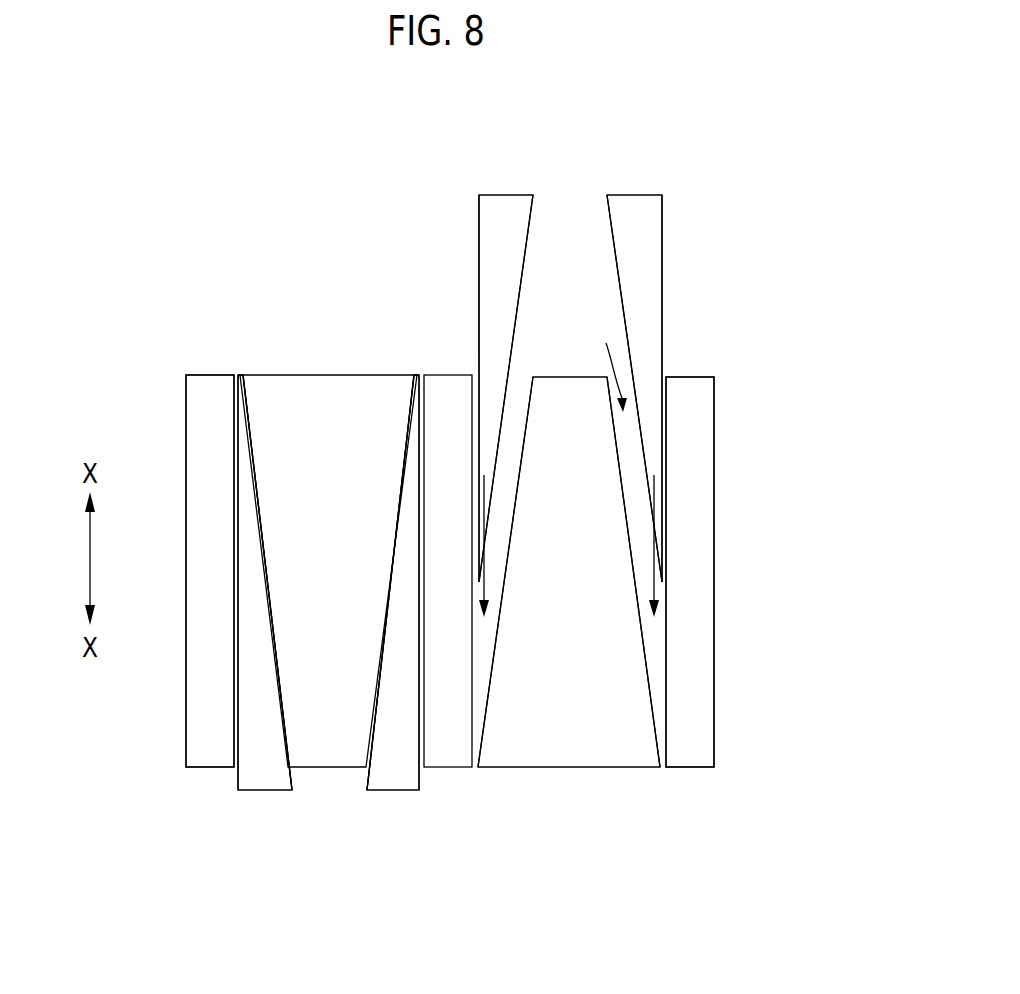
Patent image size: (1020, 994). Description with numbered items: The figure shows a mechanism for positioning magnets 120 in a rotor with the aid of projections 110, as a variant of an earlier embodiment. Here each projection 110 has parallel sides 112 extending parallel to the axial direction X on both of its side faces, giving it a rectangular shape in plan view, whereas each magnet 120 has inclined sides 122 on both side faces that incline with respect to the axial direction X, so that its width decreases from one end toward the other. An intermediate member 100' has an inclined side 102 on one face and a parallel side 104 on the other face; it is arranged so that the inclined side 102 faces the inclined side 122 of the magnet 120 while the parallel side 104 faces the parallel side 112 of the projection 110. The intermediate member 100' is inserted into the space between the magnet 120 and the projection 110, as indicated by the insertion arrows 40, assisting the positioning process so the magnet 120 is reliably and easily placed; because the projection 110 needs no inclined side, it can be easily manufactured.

The direction of movement 40 is at (608, 361).
The intermediate member 100' is at (502, 468).
The inclined side 102 is at (618, 277).
The parallel side 104 is at (478, 265).
The projection 110 is at (213, 375).
The parallel side 112 is at (185, 430).
The magnet 120 is at (338, 375).
The inclined side 122 is at (252, 468).